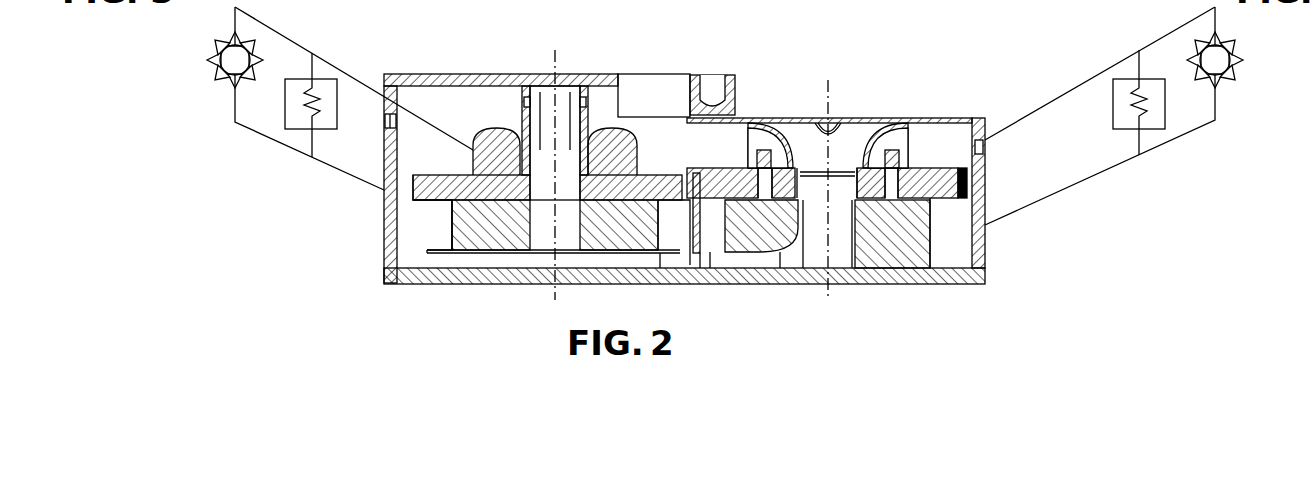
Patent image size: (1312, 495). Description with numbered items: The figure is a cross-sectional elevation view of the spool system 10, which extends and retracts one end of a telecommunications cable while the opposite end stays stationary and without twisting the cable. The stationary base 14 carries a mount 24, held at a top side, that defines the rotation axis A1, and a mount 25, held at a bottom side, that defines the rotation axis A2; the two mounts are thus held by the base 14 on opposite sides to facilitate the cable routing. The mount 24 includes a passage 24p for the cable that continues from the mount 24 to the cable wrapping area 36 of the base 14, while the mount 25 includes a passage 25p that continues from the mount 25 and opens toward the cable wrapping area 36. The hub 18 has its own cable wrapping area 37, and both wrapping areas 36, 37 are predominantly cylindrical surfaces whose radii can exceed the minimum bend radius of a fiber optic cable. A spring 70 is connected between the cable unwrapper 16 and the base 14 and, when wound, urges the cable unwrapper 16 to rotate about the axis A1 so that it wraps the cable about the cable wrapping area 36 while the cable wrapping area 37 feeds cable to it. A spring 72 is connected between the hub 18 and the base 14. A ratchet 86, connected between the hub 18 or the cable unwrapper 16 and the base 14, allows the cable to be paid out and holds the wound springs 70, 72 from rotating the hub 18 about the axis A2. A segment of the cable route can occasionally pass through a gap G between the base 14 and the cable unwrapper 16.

The spool system 10 is at (907, 46).
The base 14 is at (780, 272).
The cable unwrapper 16 is at (430, 200).
The hub 18 is at (862, 150).
The mount 24 is at (590, 163).
The passage 24p is at (537, 90).
The mount 25 is at (805, 186).
The passage 25p is at (840, 245).
The cable wrapping area 36 is at (437, 232).
The cable wrapping area 37 is at (915, 135).
The spring 70 is at (285, 125).
The spring 72 is at (1113, 95).
The ratchet 86 is at (210, 63).
The rotation axis A1 is at (553, 294).
The rotation axis A2 is at (829, 80).
The gap G is at (706, 258).